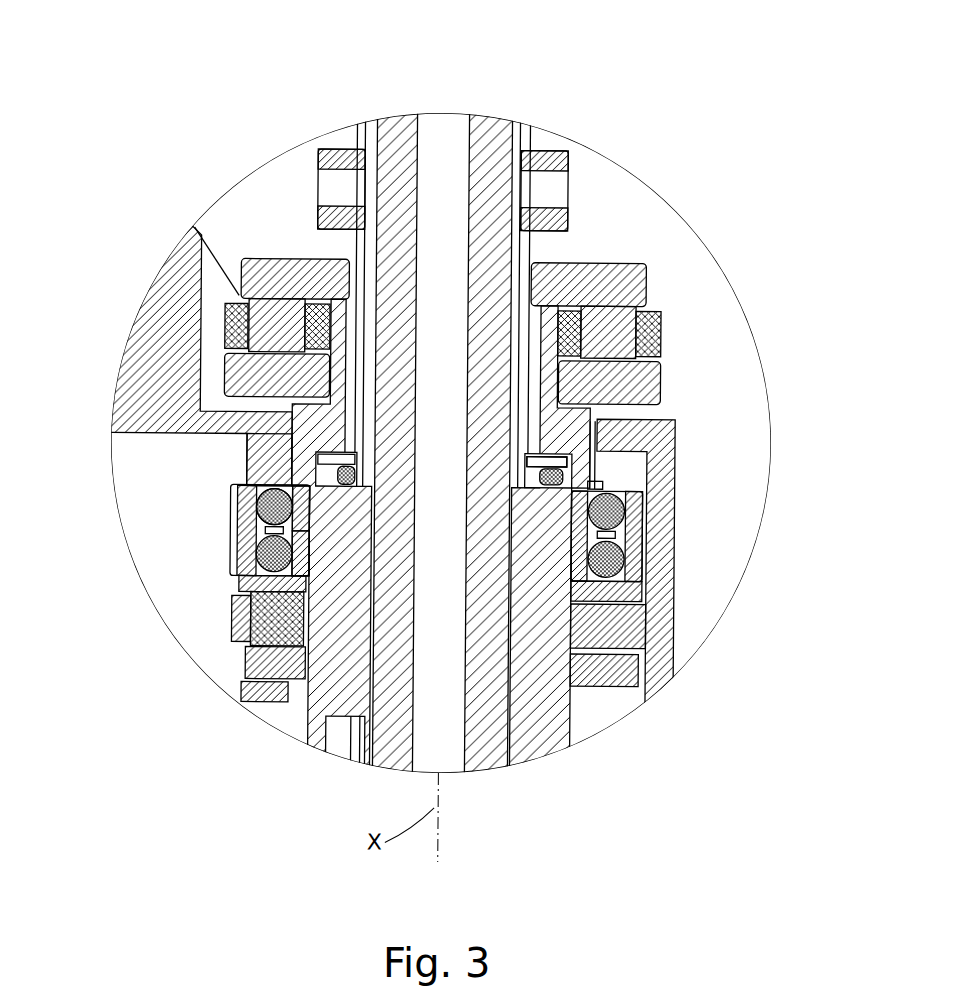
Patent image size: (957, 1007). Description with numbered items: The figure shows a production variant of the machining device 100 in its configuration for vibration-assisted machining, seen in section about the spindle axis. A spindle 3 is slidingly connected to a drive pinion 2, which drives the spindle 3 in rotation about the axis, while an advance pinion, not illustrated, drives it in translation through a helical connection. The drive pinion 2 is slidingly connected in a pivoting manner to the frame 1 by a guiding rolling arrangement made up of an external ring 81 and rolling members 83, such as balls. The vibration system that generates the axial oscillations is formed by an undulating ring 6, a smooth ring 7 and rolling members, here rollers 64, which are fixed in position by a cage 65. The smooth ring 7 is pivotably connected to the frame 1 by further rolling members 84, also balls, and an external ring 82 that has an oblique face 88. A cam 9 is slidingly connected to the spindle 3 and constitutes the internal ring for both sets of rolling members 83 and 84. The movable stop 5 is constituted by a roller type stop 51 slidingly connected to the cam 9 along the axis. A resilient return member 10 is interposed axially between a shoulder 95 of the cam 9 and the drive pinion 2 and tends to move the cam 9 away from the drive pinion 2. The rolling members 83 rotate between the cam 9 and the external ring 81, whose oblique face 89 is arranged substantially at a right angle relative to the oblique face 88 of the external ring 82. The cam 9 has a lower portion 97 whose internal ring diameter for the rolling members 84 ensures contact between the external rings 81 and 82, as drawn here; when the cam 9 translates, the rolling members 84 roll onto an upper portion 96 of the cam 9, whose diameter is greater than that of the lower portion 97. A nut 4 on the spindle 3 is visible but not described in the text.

The frame 1 is at (172, 292).
The drive pinion 2 is at (572, 748).
The spindle 3 is at (397, 120).
The nut 4 is at (568, 220).
The movable stop 5 is at (613, 373).
The roller type stop 51 is at (612, 328).
The undulating ring 6 is at (645, 695).
The rollers 64 is at (270, 703).
The cage 65 is at (648, 630).
The smooth ring 7 is at (643, 587).
The cam 9 is at (227, 400).
The resilient return member 10 is at (580, 455).
The external ring 81 is at (230, 503).
The external ring 82 is at (252, 620).
The rolling members 83 is at (243, 467).
The rolling members 84 is at (238, 620).
The oblique face 88 is at (247, 668).
The oblique face 89 is at (232, 527).
The shoulder 95 is at (565, 462).
The upper portion 96 is at (300, 537).
The lower portion 97 is at (293, 553).
The machining device 100 is at (595, 185).